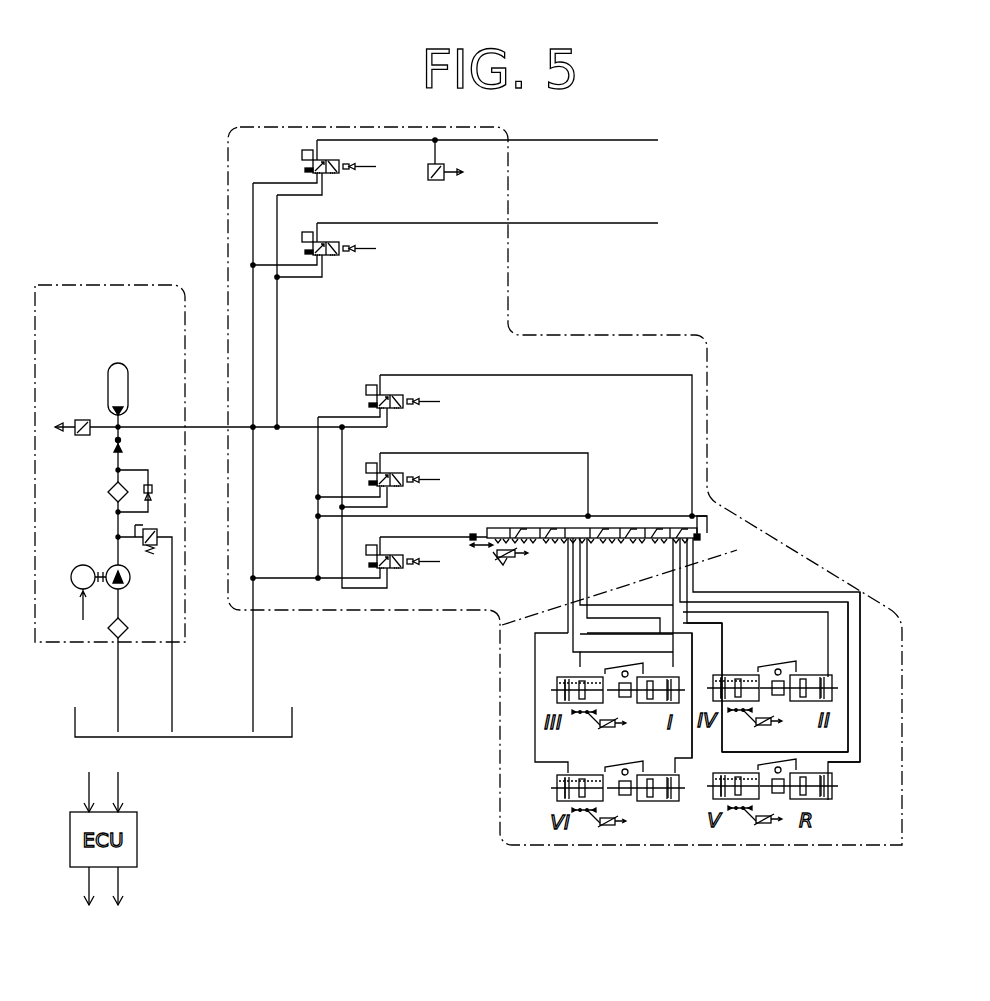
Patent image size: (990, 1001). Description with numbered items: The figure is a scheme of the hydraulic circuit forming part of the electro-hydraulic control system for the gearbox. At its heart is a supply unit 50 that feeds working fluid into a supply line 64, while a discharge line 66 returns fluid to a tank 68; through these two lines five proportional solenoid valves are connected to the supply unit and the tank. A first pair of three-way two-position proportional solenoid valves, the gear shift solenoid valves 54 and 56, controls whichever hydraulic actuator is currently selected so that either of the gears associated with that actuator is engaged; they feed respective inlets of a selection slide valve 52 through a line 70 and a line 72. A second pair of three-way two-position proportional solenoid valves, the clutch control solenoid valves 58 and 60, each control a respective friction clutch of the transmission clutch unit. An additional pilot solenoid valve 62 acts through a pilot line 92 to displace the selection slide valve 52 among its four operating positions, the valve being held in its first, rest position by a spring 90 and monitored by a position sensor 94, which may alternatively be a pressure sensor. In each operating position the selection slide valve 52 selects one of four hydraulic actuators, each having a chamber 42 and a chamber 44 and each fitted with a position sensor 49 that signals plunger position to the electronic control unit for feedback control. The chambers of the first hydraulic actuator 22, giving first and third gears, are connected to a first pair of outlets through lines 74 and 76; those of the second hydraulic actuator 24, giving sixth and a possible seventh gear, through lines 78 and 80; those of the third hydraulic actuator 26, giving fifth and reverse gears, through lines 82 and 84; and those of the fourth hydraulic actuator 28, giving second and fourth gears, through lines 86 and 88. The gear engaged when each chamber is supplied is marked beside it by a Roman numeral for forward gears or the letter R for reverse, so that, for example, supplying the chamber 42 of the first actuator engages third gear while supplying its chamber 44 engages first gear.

The first hydraulic actuator 22 is at (557, 688).
The second hydraulic actuator 24 is at (557, 790).
The third hydraulic actuator 26 is at (830, 780).
The fourth hydraulic actuator 28 is at (832, 686).
The chamber 42 is at (573, 682).
The chamber 44 is at (668, 702).
The position sensor 49 is at (608, 724).
The supply unit 50 is at (107, 284).
The selection slide valve 52 is at (637, 528).
The gear shift solenoid valve 54 is at (392, 395).
The gear shift solenoid valve 56 is at (393, 473).
The clutch control solenoid valve 58 is at (340, 257).
The clutch control solenoid valve 60 is at (325, 160).
The pilot solenoid valve 62 is at (400, 570).
The supply line 64 is at (205, 427).
The discharge line 66 is at (255, 650).
The tank 68 is at (207, 736).
The line 70 is at (478, 375).
The line 72 is at (523, 453).
The line 74 is at (683, 590).
The line 76 is at (567, 585).
The line 78 is at (535, 737).
The line 80 is at (697, 660).
The line 82 is at (850, 690).
The line 84 is at (860, 722).
The line 86 is at (725, 630).
The line 88 is at (868, 667).
The spring 90 is at (718, 535).
The pilot line 92 is at (458, 532).
The position sensor 94 is at (506, 562).